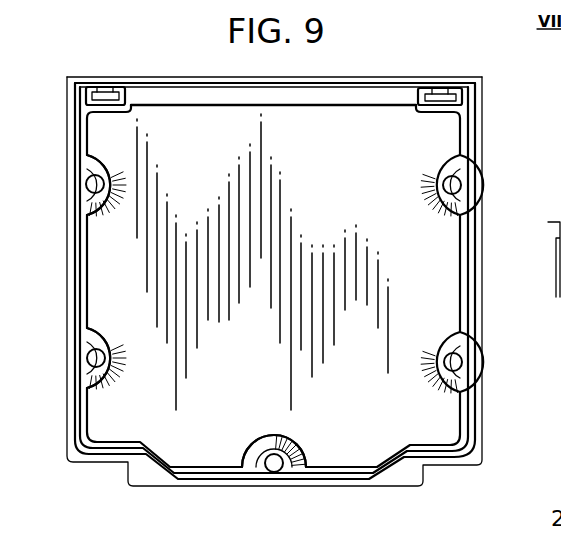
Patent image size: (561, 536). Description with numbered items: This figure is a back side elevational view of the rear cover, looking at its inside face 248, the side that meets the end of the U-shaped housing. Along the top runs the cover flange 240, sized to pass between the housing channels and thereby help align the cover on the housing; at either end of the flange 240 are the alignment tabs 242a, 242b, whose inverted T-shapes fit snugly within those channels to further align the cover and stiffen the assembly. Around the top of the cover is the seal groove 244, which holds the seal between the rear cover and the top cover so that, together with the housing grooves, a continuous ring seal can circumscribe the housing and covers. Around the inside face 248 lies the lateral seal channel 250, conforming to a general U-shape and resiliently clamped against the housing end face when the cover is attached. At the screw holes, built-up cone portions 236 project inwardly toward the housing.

The cone portion 236 is at (92, 168).
The cover flange 240 is at (300, 96).
The alignment tab 242a is at (105, 88).
The alignment tab 242b is at (447, 90).
The seal groove 244 is at (226, 80).
The inside face 248 is at (442, 262).
The lateral seal channel 250 is at (476, 105).